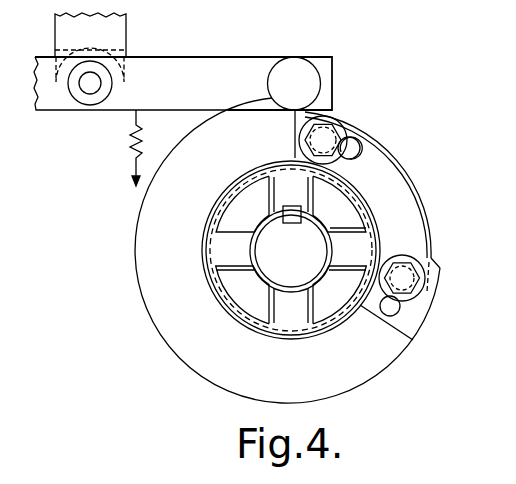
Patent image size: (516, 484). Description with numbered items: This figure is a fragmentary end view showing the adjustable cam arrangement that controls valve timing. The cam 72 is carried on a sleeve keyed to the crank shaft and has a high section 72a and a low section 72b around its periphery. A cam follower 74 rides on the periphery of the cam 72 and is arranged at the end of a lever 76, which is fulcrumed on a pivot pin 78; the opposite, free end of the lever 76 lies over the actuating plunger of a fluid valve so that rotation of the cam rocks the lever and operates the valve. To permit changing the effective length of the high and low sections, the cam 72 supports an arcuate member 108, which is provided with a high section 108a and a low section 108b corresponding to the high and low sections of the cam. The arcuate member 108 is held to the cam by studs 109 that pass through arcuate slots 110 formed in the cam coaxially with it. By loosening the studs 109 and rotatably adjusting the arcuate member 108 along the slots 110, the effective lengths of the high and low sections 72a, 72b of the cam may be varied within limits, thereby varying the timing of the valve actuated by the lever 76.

The cam 72 is at (255, 250).
The high section 72a is at (135, 260).
The low section 72b is at (394, 223).
The cam follower 74 is at (299, 71).
The lever 76 is at (183, 67).
The pivot pin 78 is at (90, 86).
The arcuate member 108 is at (382, 162).
The high section 108a is at (420, 192).
The low section 108b is at (436, 308).
The stud 109 is at (403, 279).
The arcuate slot 110 is at (409, 339).